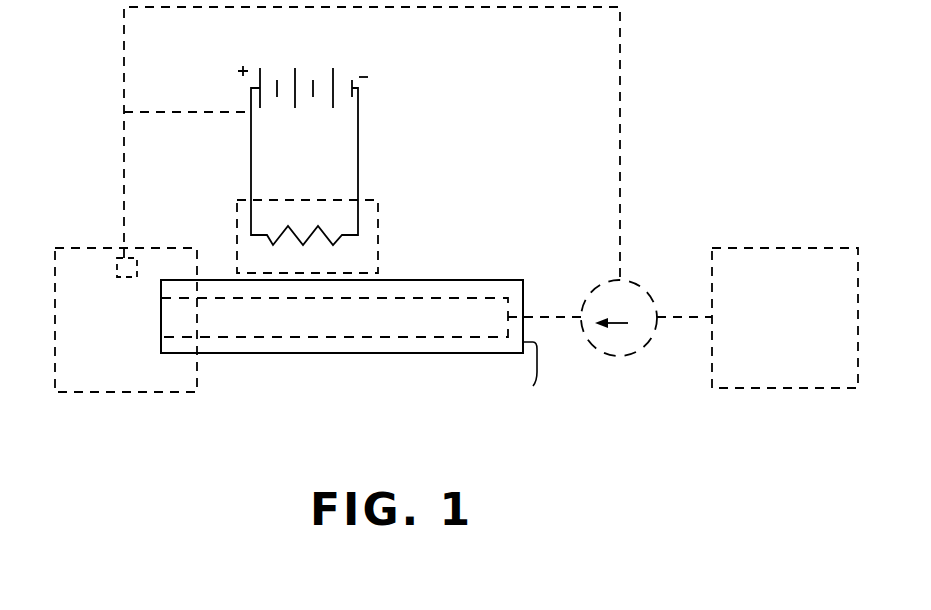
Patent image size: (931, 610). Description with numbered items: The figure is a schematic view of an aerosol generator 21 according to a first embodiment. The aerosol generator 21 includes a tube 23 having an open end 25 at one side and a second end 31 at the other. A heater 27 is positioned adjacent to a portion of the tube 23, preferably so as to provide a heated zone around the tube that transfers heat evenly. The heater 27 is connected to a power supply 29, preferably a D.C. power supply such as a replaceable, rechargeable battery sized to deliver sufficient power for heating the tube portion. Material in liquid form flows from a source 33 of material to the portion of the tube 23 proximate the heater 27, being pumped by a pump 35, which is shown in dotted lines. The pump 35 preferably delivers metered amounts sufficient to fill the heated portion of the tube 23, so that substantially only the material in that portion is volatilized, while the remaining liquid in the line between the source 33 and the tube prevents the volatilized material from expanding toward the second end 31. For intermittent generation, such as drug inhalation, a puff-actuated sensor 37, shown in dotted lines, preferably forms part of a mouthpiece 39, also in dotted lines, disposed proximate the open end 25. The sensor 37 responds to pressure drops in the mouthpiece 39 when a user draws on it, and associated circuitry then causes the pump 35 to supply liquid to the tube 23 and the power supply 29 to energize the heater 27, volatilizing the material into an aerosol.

The aerosol generator 21 is at (236, 429).
The tube 23 is at (363, 352).
The open end 25 is at (161, 323).
The heater 27 is at (380, 237).
The power supply 29 is at (352, 61).
The second end 31 is at (535, 379).
The source of material 33 is at (765, 390).
The pump 35 is at (624, 361).
The puff-actuated sensor 37 is at (119, 262).
The mouthpiece 39 is at (62, 246).